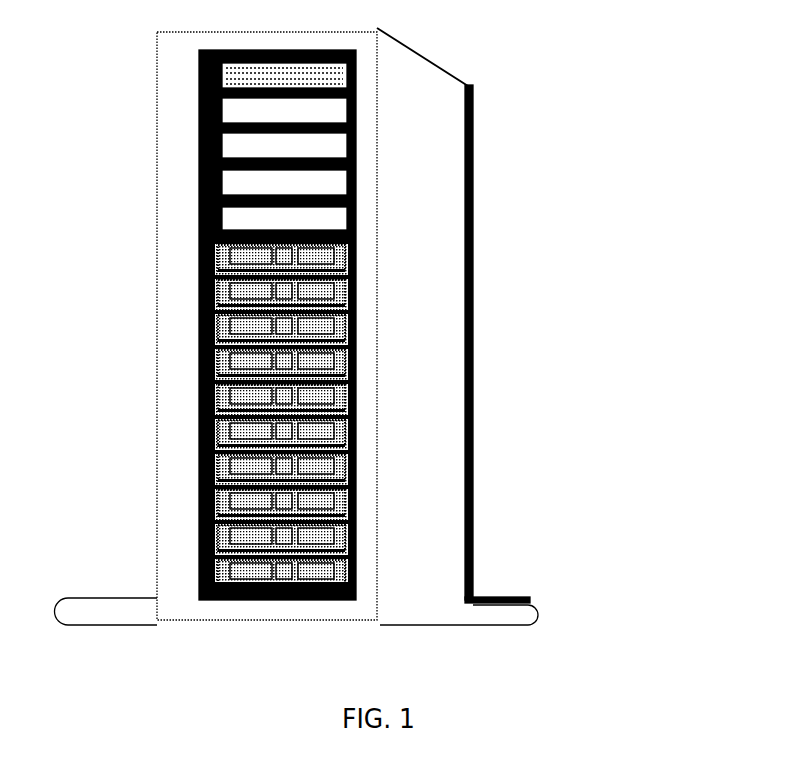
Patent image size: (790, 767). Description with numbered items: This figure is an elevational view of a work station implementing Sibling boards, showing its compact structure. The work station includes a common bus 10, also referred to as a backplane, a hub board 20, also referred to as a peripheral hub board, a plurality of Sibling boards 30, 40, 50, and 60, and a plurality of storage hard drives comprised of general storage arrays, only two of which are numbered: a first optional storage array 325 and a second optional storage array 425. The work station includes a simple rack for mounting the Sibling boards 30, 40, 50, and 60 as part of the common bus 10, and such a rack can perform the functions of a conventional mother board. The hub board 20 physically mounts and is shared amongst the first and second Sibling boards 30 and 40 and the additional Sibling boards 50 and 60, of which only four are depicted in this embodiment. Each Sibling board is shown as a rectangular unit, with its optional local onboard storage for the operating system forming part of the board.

The common bus 10 is at (85, 297).
The hub board 20 is at (640, 80).
The Sibling board 30 is at (503, 112).
The Sibling board 40 is at (503, 145).
The Sibling board 50 is at (503, 183).
The Sibling board 60 is at (503, 218).
The first optional storage array 325 is at (360, 258).
The second optional storage array 425 is at (381, 411).